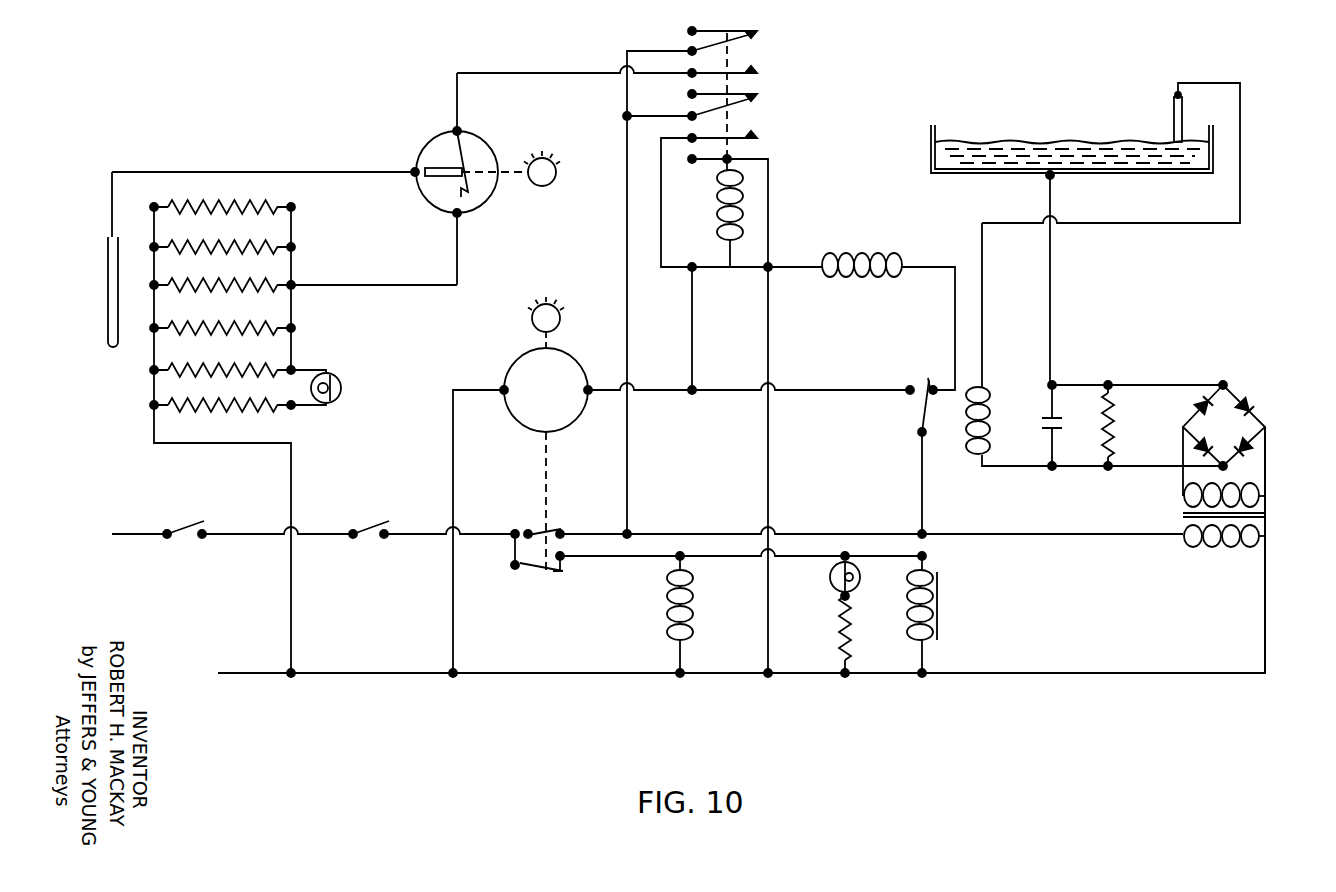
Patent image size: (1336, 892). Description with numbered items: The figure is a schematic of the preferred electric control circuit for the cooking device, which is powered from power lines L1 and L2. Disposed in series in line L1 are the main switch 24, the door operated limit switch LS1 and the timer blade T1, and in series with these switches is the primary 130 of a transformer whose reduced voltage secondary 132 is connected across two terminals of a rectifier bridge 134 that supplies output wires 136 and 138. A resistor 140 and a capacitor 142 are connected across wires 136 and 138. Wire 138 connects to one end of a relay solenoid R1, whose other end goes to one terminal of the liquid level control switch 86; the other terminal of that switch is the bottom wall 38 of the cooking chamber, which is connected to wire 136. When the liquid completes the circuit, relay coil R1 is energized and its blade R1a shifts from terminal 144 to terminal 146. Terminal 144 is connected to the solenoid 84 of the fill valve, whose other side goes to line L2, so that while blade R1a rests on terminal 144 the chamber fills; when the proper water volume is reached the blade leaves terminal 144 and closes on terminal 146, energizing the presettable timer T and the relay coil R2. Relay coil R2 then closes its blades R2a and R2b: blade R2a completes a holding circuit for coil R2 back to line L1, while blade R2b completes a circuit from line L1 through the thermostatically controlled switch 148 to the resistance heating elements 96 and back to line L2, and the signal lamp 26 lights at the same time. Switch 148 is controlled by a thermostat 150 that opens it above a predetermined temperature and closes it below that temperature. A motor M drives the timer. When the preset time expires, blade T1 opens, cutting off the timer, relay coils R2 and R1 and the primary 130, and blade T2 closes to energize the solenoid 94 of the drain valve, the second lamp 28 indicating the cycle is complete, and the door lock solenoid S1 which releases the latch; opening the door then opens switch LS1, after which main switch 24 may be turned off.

The main switch 24 is at (197, 524).
The signal lamp 26 is at (340, 378).
The second lamp 28 is at (830, 577).
The bottom wall of the cooking chamber 38 is at (1135, 172).
The solenoid of fill valve 84 is at (876, 253).
The liquid level control switch 86 is at (1172, 118).
The solenoid of drain valve 94 is at (696, 588).
The resistance heating elements 96 is at (262, 210).
The transformer primary 130 is at (1257, 530).
The transformer secondary 132 is at (1250, 503).
The rectifier bridge 134 is at (1238, 398).
The output wire 136 is at (1158, 384).
The output wire 138 is at (1145, 468).
The resistor 140 is at (1118, 428).
The capacitor 142 is at (1040, 416).
The terminal 144 is at (932, 385).
The terminal 146 is at (908, 388).
The thermostatically controlled switch 148 is at (462, 166).
The thermostat 150 is at (107, 290).
The power line L1 is at (143, 532).
The power line L2 is at (252, 672).
The door operated limit switch LS1 is at (372, 527).
The motor M is at (681, 510).
The timer T is at (560, 362).
The timer blade T1 is at (553, 532).
The timer blade T2 is at (555, 572).
The door lock solenoid S1 is at (938, 598).
The relay solenoid R1 is at (975, 478).
The relay blade R1a is at (917, 418).
The relay coil R2 is at (743, 210).
The relay blade R2a is at (757, 102).
The relay blade R2b is at (756, 37).